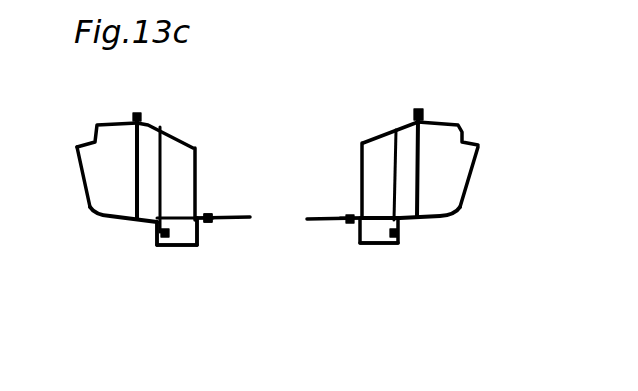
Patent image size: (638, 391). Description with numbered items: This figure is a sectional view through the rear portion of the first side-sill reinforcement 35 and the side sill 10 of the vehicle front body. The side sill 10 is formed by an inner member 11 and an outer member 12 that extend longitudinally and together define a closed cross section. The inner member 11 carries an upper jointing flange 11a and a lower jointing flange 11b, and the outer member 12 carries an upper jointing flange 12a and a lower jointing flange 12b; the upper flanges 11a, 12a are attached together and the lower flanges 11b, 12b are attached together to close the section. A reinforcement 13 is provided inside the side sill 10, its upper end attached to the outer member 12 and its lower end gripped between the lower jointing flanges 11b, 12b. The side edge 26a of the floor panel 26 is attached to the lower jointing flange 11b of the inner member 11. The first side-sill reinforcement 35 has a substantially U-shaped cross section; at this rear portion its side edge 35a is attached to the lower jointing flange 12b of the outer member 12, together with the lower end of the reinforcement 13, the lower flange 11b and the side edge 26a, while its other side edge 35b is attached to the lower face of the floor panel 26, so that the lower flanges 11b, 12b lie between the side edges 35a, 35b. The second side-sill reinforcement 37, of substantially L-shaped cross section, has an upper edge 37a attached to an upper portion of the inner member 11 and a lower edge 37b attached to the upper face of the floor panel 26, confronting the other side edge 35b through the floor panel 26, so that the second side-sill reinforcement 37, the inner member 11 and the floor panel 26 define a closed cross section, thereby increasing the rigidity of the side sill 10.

The side sill 10 is at (76, 149).
The inner member 11 is at (420, 172).
The upper jointing flange 11a is at (143, 116).
The lower jointing flange 11b is at (162, 248).
The outer member 12 is at (85, 184).
The upper jointing flange 12a is at (133, 115).
The lower jointing flange 12b is at (160, 238).
The reinforcement 13 is at (138, 168).
The floor panel 26 is at (308, 217).
The side edge 26a is at (207, 225).
The first side-sill reinforcement 35 is at (187, 251).
The side edge 35a is at (157, 230).
The other side edge 35b is at (207, 222).
The second side-sill reinforcement 37 is at (362, 172).
The upper edge 37a is at (160, 127).
The lower edge 37b is at (208, 218).